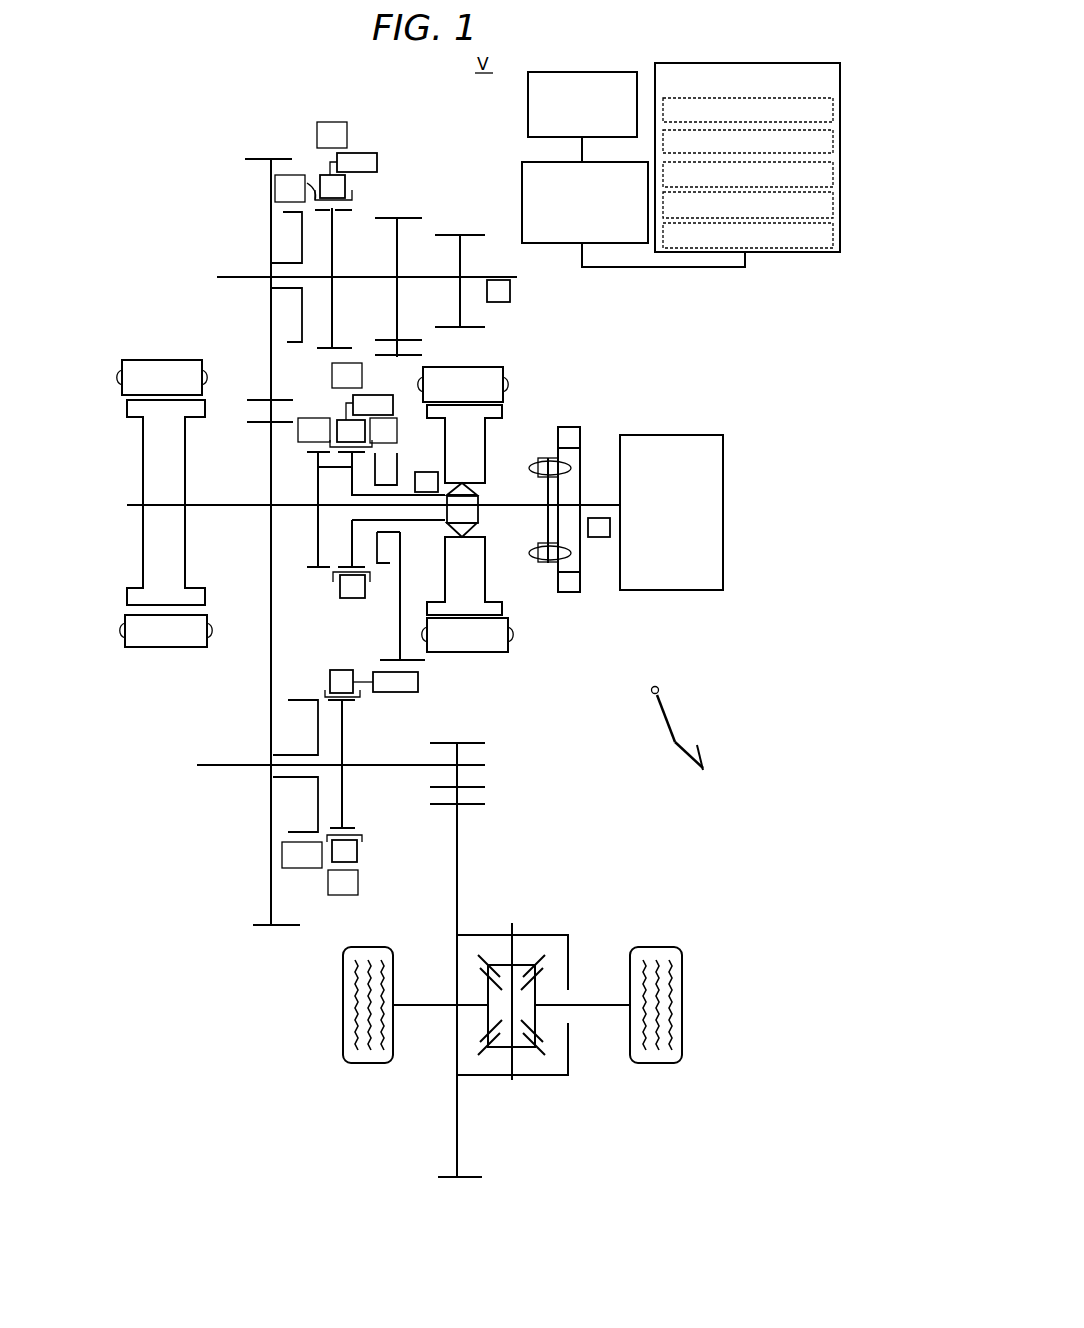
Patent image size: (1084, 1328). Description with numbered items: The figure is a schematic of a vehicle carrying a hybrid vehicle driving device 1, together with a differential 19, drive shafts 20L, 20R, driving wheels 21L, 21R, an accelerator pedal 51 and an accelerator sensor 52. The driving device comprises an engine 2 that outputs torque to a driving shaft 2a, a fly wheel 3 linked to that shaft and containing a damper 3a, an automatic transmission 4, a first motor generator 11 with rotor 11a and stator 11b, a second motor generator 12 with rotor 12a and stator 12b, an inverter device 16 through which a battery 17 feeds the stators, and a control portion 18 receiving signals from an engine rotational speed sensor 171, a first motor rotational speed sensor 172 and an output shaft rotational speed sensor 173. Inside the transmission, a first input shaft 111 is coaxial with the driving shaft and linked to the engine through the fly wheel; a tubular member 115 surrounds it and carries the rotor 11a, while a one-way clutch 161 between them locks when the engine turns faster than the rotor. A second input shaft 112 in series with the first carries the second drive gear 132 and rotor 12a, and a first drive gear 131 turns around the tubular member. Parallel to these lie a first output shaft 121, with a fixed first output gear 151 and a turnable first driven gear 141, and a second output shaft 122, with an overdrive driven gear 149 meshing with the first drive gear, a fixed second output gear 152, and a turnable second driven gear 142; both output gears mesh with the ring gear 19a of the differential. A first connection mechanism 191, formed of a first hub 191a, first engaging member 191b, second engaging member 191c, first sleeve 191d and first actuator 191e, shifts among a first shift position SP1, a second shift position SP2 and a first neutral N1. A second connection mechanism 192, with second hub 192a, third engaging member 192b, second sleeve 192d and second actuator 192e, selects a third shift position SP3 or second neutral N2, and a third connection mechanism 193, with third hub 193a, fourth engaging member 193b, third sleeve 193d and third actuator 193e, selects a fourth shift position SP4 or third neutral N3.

The hybrid vehicle driving device 1 is at (427, 140).
The engine 2 is at (668, 433).
The driving shaft 2a is at (599, 506).
The fly wheel 3 is at (564, 426).
The damper 3a is at (537, 453).
The automatic transmission 4 is at (213, 208).
The first motor generator 11 is at (514, 513).
The rotor 11a is at (507, 606).
The stator 11b is at (507, 639).
The second motor generator 12 is at (112, 503).
The rotor 12a is at (130, 580).
The stator 12b is at (130, 630).
The inverter device 16 is at (520, 203).
The battery 17 is at (610, 72).
The control portion 18 is at (715, 63).
The differential 19 is at (583, 887).
The ring gear 19a is at (437, 802).
The drive shaft 20L is at (422, 1005).
The drive shaft 20R is at (597, 1005).
The driving wheel 21L is at (367, 1064).
The driving wheel 21R is at (654, 1064).
The accelerator pedal 51 is at (672, 741).
The accelerator sensor 52 is at (663, 700).
The first input shaft 111 is at (510, 505).
The second input shaft 112 is at (250, 503).
The tubular member 115 is at (415, 522).
The first output shaft 121 is at (385, 762).
The second output shaft 122 is at (501, 280).
The first drive gear 131 is at (407, 353).
The second drive gear 132 is at (250, 420).
The first driven gear 141 is at (263, 928).
The second driven gear 142 is at (270, 157).
The overdrive driven gear 149 is at (417, 217).
The first output gear 151 is at (470, 740).
The second output gear 152 is at (462, 229).
The one-way clutch 161 is at (490, 522).
The engine rotational speed sensor 171 is at (600, 538).
The first motor rotational speed sensor 172 is at (427, 472).
The output shaft rotational speed sensor 173 is at (500, 302).
The first connection mechanism 191 is at (330, 401).
The first hub 191a is at (317, 466).
The first engaging member 191b is at (390, 453).
The second engaging member 191c is at (315, 455).
The first sleeve 191d is at (335, 575).
The first actuator 191e is at (378, 398).
The second connection mechanism 192 is at (343, 653).
The second hub 192a is at (346, 720).
The third engaging member 192b is at (301, 697).
The second sleeve 192d is at (338, 670).
The second actuator 192e is at (358, 663).
The third connection mechanism 193 is at (333, 97).
The third hub 193a is at (332, 240).
The fourth engaging member 193b is at (308, 200).
The third sleeve 193d is at (347, 195).
The third actuator 193e is at (345, 185).
The first neutral N1 is at (347, 375).
The second neutral N2 is at (343, 882).
The third neutral N3 is at (332, 135).
The first shift position SP1 is at (383, 430).
The second shift position SP2 is at (314, 430).
The third shift position SP3 is at (302, 855).
The fourth shift position SP4 is at (295, 188).